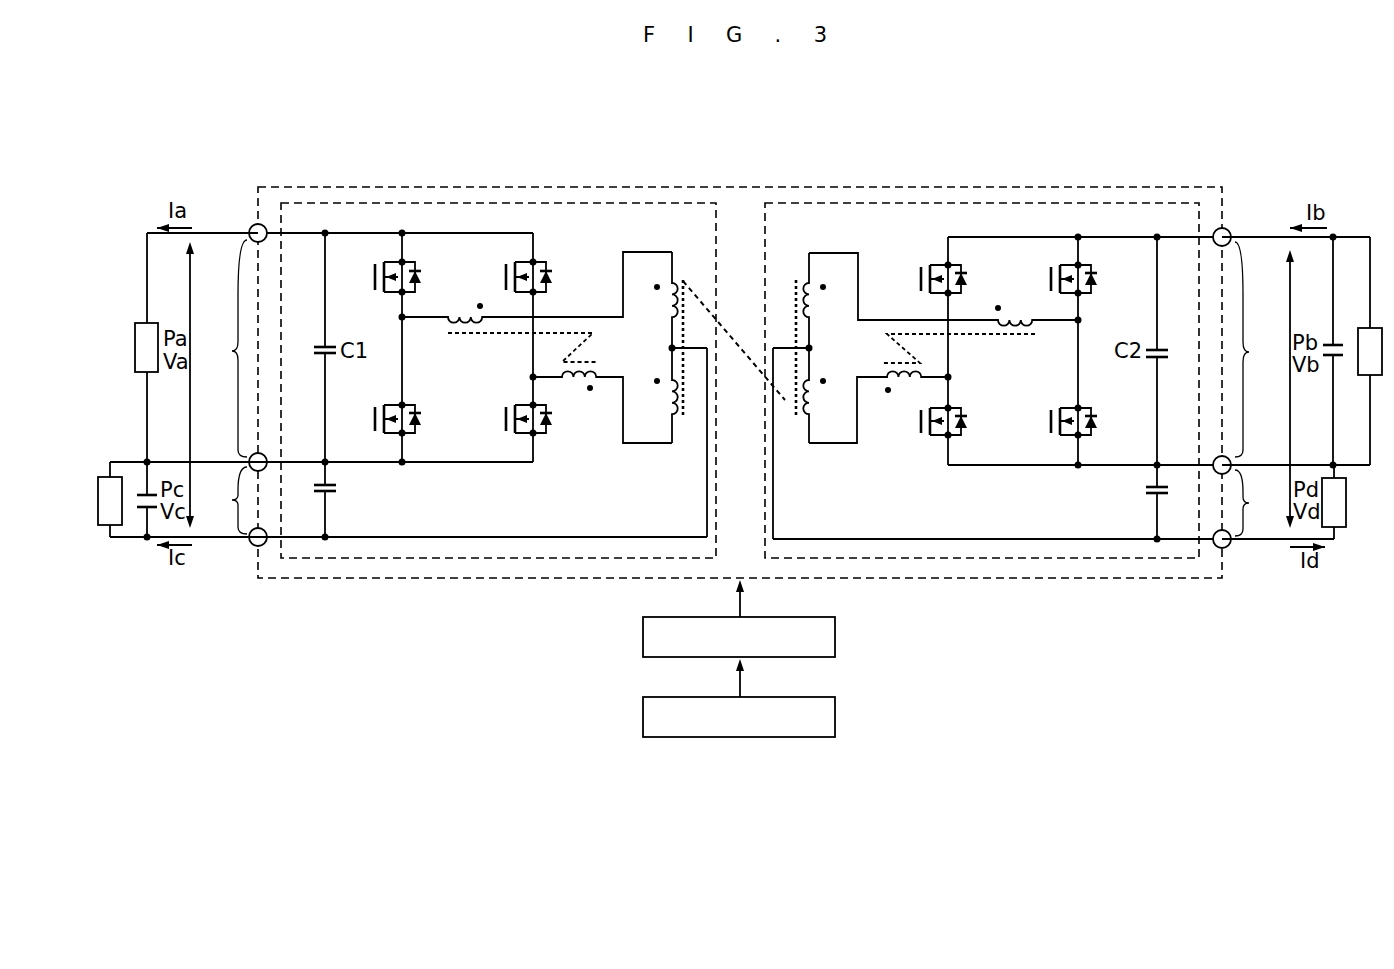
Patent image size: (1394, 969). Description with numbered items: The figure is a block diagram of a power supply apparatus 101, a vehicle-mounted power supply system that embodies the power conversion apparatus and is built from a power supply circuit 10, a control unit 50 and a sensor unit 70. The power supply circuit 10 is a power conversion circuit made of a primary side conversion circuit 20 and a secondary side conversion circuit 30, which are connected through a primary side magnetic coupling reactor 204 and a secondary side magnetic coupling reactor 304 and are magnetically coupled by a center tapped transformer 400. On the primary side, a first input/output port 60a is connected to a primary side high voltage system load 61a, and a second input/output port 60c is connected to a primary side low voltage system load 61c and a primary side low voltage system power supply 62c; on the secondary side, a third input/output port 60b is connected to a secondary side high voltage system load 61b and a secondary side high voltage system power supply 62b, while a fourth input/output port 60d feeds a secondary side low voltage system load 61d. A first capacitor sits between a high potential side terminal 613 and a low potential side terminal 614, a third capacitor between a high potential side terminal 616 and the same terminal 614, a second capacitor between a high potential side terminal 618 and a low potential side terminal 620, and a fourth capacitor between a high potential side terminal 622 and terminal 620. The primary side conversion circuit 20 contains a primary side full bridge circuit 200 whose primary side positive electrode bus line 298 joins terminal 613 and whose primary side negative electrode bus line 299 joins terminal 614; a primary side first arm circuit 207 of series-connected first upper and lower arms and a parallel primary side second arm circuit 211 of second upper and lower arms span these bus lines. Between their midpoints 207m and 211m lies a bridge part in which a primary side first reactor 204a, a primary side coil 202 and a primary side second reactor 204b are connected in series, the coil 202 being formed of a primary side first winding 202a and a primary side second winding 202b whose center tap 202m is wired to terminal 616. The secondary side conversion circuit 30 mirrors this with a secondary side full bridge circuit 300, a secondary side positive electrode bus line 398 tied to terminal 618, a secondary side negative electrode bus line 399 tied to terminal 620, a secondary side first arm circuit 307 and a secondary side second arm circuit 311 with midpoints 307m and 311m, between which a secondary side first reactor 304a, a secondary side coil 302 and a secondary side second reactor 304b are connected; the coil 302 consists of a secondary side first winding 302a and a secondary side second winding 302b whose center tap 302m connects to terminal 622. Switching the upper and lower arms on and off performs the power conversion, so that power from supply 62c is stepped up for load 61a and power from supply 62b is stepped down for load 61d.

The power supply apparatus 101 is at (243, 119).
The power supply circuit 10 is at (1112, 187).
The primary side conversion circuit 20 is at (489, 184).
The secondary side conversion circuit 30 is at (990, 184).
The primary side full bridge circuit 200 is at (573, 203).
The secondary side full bridge circuit 300 is at (905, 203).
The primary side coil 202 is at (650, 316).
The primary side first winding 202a is at (660, 300).
The primary side second winding 202b is at (660, 420).
The center tap 202m is at (670, 348).
The secondary side coil 302 is at (840, 316).
The secondary side first winding 302a is at (822, 300).
The secondary side second winding 302b is at (827, 420).
The center tap 302m is at (811, 348).
The primary side magnetic coupling reactor 204 is at (537, 347).
The primary side first reactor 204a is at (458, 310).
The primary side second reactor 204b is at (582, 385).
The secondary side magnetic coupling reactor 304 is at (943, 349).
The secondary side first reactor 304a is at (1008, 310).
The secondary side second reactor 304b is at (890, 388).
The primary side first arm circuit 207 is at (387, 455).
The midpoint of primary side first arm circuit 207m is at (400, 317).
The primary side second arm circuit 211 is at (515, 455).
The midpoint of primary side second arm circuit 211m is at (531, 378).
The secondary side first arm circuit 307 is at (1045, 455).
The midpoint of secondary side first arm circuit 307m is at (1080, 320).
The secondary side second arm circuit 311 is at (920, 455).
The midpoint of secondary side second arm circuit 311m is at (950, 378).
The primary side positive electrode bus line 298 is at (355, 233).
The primary side negative electrode bus line 299 is at (350, 465).
The secondary side positive electrode bus line 398 is at (1105, 237).
The secondary side negative electrode bus line 399 is at (1117, 468).
The transformer 400 is at (741, 312).
The high potential side terminal 613 is at (252, 226).
The low potential side terminal 614 is at (264, 453).
The high potential side terminal 616 is at (255, 547).
The high potential side terminal 618 is at (1230, 230).
The low potential side terminal 620 is at (1214, 458).
The high potential side terminal 622 is at (1226, 548).
The primary side high voltage system load 61a is at (153, 323).
The secondary side high voltage system load 61b is at (1366, 328).
The primary side low voltage system load 61c is at (110, 525).
The secondary side low voltage system load 61d is at (1340, 530).
The secondary side high voltage system power supply 62b is at (1328, 362).
The primary side low voltage system power supply 62c is at (140, 492).
The first input/output port 60a is at (216, 351).
The third input/output port 60b is at (1264, 353).
The second input/output port 60c is at (216, 498).
The fourth input/output port 60d is at (1264, 500).
The control unit 50 is at (836, 637).
The sensor unit 70 is at (836, 717).